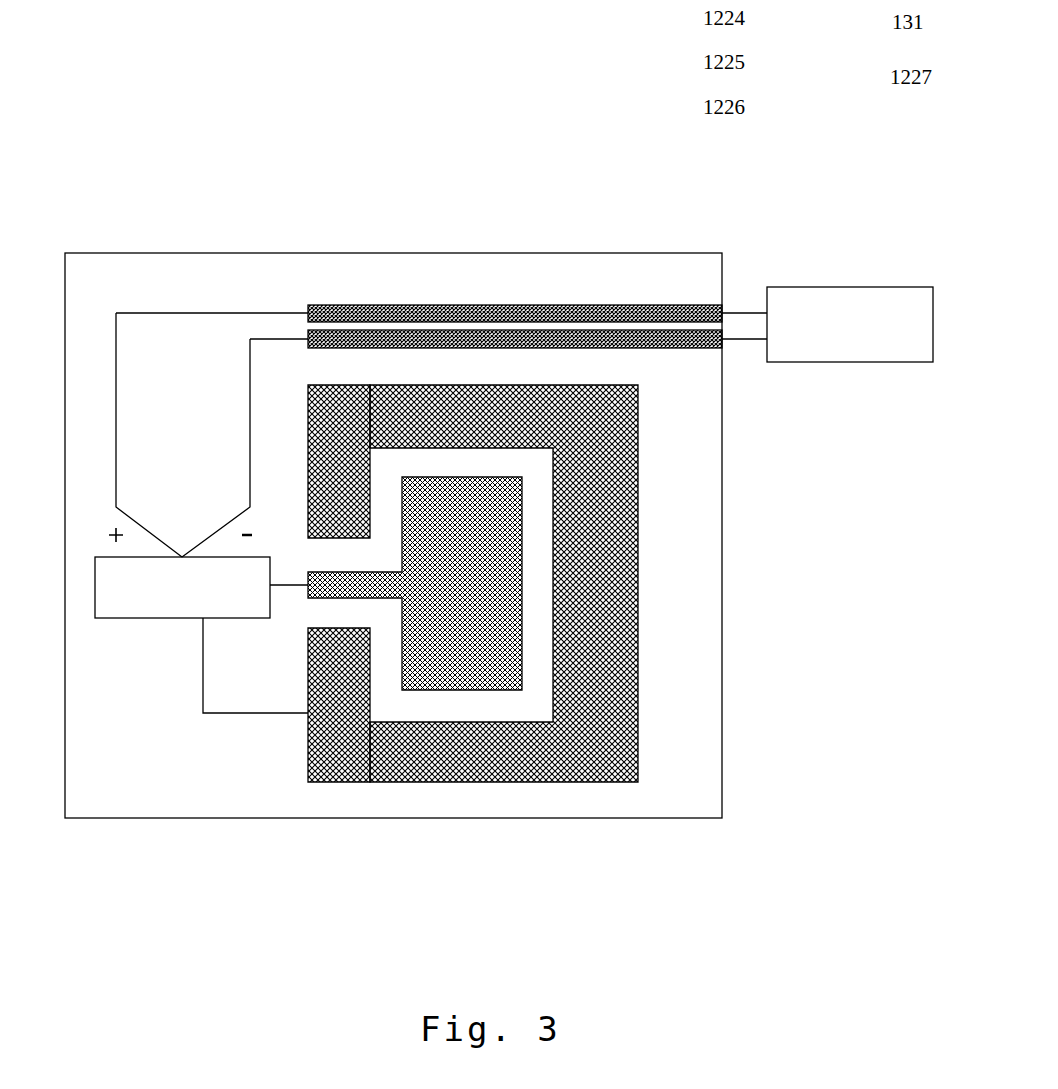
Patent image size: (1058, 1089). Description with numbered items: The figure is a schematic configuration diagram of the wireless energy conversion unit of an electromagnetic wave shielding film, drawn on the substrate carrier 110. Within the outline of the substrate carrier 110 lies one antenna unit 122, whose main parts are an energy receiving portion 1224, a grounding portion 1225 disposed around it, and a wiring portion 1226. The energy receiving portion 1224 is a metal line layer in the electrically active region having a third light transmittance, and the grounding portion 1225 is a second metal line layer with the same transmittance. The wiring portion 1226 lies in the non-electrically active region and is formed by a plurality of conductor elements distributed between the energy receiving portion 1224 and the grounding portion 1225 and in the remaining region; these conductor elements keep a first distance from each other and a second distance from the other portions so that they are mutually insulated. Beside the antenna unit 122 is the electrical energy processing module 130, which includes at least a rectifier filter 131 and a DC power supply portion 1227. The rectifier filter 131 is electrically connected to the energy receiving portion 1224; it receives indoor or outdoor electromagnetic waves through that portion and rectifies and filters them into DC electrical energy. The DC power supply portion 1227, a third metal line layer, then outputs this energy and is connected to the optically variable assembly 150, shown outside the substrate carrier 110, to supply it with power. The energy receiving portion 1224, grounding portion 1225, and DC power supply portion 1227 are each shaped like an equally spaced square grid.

The substrate carrier 110 is at (167, 818).
The antenna unit 122 is at (692, 12).
The electrical energy processing module 130 is at (878, 16).
The rectifier filter 131 is at (183, 618).
The optically variable assembly 150 is at (857, 362).
The energy receiving portion 1224 is at (458, 700).
The grounding portion 1225 is at (300, 752).
The wiring portion 1226 is at (653, 807).
The DC power supply portion 1227 is at (498, 310).